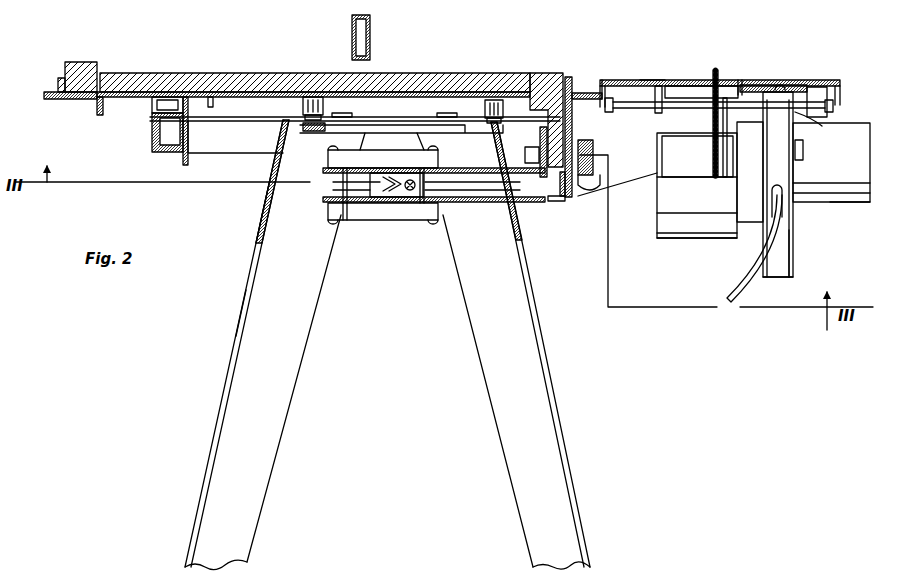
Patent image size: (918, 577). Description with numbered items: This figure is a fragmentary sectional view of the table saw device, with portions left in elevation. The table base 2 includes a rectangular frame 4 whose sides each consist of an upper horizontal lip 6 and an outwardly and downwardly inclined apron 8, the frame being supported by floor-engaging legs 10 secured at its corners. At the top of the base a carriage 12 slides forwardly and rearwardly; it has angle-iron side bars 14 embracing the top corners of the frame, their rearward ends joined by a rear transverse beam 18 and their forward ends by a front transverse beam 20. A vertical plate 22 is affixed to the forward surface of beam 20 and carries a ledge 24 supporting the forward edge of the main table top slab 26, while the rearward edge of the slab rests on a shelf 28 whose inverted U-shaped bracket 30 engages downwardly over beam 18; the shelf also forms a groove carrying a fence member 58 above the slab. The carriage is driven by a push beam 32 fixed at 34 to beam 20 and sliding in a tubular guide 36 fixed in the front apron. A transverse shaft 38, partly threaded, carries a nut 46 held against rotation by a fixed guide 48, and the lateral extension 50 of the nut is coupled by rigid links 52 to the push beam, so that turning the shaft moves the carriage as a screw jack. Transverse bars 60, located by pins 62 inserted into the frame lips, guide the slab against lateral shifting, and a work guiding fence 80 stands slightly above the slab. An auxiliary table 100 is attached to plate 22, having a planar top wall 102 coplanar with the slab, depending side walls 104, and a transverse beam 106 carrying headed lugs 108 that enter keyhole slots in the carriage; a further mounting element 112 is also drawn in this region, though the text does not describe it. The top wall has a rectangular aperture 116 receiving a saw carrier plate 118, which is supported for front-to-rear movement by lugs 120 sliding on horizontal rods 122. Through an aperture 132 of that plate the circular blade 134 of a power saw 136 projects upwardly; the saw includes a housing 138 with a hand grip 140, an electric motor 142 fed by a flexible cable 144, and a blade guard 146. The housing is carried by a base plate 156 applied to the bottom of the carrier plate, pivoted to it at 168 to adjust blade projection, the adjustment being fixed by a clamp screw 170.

The table base 2 is at (229, 382).
The frame 4 is at (258, 229).
The upper horizontal lip 6 is at (272, 160).
The apron 8 is at (263, 198).
The leg 10 is at (217, 478).
The carriage 12 is at (222, 157).
The angle-iron side bar 14 is at (202, 147).
The rear transverse beam 18 is at (158, 148).
The front transverse beam 20 is at (555, 203).
The plate 22 is at (563, 200).
The ledge 24 is at (548, 78).
The main table top slab 26 is at (240, 73).
The shelf 28 is at (118, 97).
The bracket 30 is at (184, 163).
The push beam 32 is at (497, 193).
The push beam fixing point 34 is at (537, 150).
The tubular guide 36 is at (483, 204).
The shaft 38 is at (414, 192).
The nut 46 is at (400, 195).
The fixed guide 48 is at (380, 190).
The lateral horizontal extension 50 is at (357, 218).
The rigid link 52 is at (332, 212).
The fence member 58 is at (84, 62).
The transverse horizontal bar 60 is at (311, 97).
The pin 62 is at (310, 127).
The work guiding fence 80 is at (371, 36).
The auxiliary table 100 is at (825, 82).
The top wall 102 is at (614, 80).
The side wall 104 is at (625, 180).
The transverse beam 106 is at (597, 186).
The headed lug 108 is at (568, 80).
The mounting flange 112 is at (588, 90).
The rectangular aperture 116 is at (647, 82).
The saw carrier plate 118 is at (752, 85).
The lug 120 is at (658, 115).
The horizontal rod 122 is at (612, 108).
The rectangular aperture 132 is at (692, 86).
The circular blade 134 is at (716, 70).
The power saw 136 is at (808, 204).
The housing 138 is at (773, 280).
The hand grip 140 is at (788, 262).
The electric motor 142 is at (853, 201).
The flexible cable 144 is at (732, 285).
The blade guard 146 is at (672, 238).
The base plate 156 is at (783, 86).
The pivot 168 is at (862, 114).
The clamp screw 170 is at (805, 148).